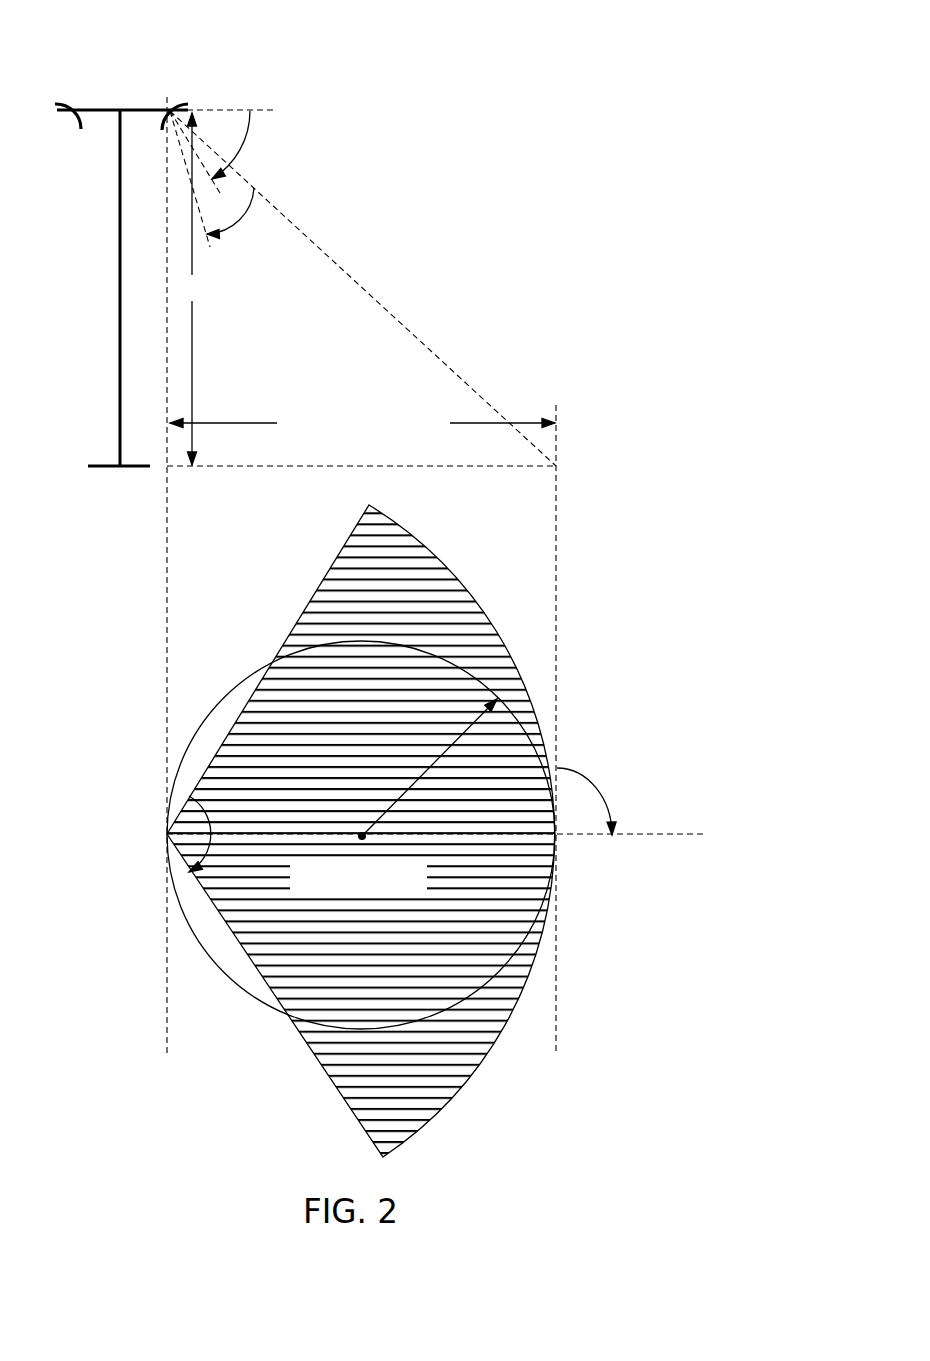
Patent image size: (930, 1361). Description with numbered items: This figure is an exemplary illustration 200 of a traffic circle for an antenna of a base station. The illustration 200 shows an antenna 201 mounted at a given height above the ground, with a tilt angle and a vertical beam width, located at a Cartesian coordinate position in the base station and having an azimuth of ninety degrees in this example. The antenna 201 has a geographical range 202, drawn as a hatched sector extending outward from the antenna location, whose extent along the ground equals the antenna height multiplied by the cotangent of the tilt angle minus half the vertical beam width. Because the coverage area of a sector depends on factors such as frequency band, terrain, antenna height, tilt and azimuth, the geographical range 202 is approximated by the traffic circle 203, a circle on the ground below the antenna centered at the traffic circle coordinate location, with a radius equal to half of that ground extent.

The exemplary illustration 200 is at (529, 79).
The antenna 201 is at (189, 104).
The geographical range 202 is at (470, 593).
The traffic circle 203 is at (237, 685).